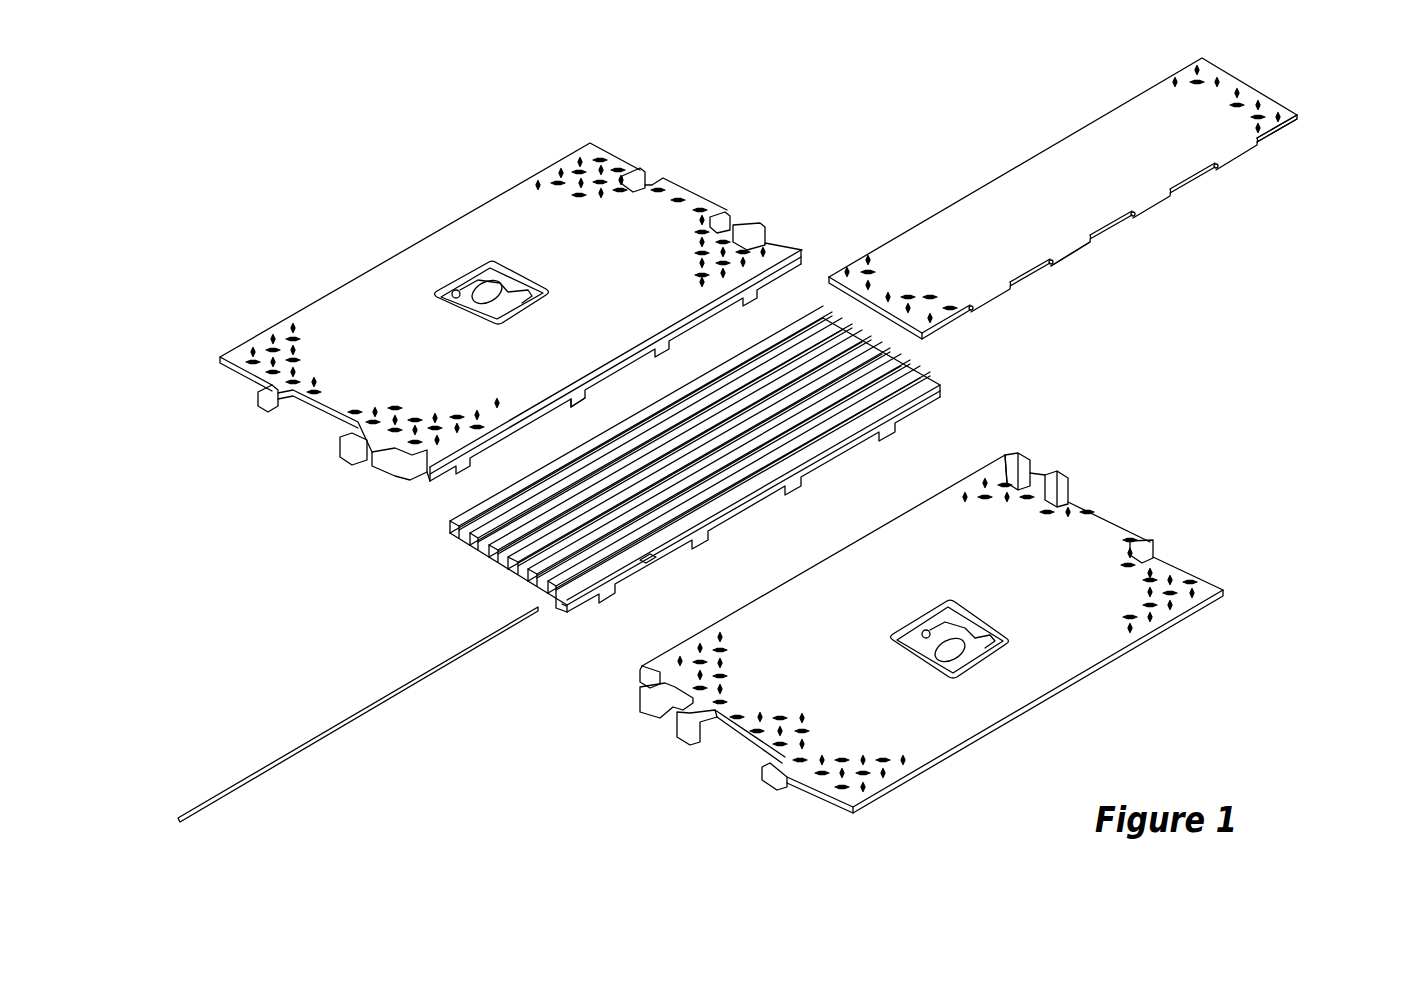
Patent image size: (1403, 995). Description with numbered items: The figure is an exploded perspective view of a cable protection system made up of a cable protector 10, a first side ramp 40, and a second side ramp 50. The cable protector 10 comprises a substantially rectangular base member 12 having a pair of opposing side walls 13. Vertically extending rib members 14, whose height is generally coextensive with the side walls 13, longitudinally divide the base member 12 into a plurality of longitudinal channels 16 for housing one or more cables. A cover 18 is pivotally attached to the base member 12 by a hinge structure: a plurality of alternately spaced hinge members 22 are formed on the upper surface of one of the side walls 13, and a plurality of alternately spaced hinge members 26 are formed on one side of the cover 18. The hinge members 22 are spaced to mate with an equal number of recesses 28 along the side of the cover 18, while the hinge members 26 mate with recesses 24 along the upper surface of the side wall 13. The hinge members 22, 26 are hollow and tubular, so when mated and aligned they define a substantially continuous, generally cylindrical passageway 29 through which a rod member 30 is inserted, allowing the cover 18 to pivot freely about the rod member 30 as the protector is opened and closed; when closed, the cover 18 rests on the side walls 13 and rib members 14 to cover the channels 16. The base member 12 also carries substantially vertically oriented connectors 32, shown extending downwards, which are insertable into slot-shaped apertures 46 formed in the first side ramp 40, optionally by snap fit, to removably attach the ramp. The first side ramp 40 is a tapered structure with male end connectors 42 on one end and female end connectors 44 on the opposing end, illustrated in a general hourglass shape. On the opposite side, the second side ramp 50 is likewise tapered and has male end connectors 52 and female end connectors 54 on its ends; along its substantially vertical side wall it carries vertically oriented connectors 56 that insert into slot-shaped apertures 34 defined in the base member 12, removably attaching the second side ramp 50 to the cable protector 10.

The cable protector 10 is at (708, 512).
The base member 12 is at (490, 575).
The side walls 13 is at (566, 612).
The rib members 14 is at (870, 335).
The longitudinal channels 16 is at (890, 350).
The cover 18 is at (1025, 175).
The hinge members 22 is at (680, 548).
The recesses 24 is at (646, 562).
The hinge members 26 is at (1268, 150).
The recesses 28 is at (1120, 232).
The passageway 29 is at (552, 610).
The rod member 30 is at (310, 731).
The connectors 32 is at (712, 540).
The apertures 34 is at (492, 508).
The first side ramp 40 is at (1118, 686).
The male end connectors 42 is at (648, 690).
The female end connectors 44 is at (1032, 468).
The apertures 46 is at (995, 470).
The second side ramp 50 is at (362, 244).
The male end connectors 52 is at (262, 402).
The female end connectors 54 is at (640, 176).
The connectors 56 is at (578, 400).